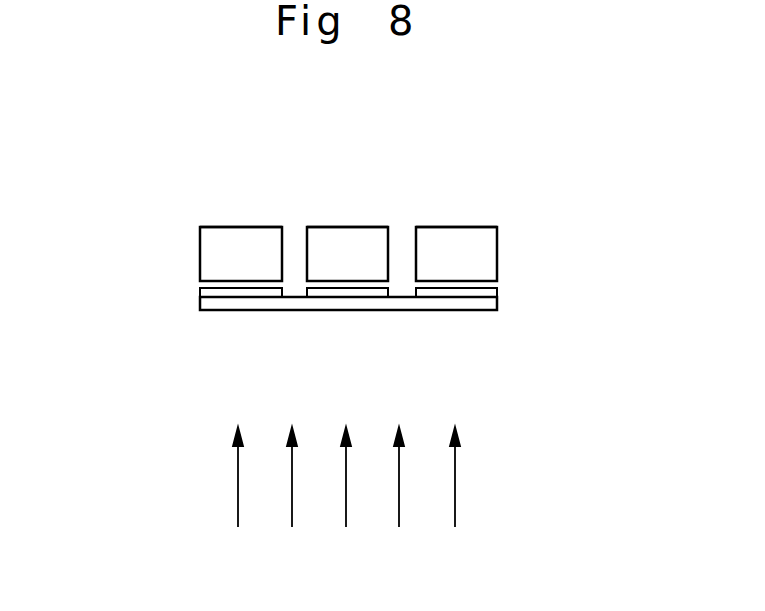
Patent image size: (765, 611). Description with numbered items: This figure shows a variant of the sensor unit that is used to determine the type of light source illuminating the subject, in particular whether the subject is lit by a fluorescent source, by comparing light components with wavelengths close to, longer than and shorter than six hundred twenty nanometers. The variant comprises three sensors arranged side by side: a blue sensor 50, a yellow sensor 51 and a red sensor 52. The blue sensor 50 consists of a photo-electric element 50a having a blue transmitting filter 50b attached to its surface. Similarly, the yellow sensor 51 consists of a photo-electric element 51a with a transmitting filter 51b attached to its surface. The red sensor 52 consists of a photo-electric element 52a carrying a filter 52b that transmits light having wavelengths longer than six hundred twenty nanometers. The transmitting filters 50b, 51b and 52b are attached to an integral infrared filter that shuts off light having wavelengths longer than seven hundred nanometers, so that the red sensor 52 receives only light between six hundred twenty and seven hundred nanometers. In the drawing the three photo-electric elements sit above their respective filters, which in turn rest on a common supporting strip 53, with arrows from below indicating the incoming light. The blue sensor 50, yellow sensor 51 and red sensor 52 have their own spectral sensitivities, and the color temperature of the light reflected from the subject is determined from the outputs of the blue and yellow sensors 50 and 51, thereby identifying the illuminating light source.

The blue sensor 50 is at (500, 242).
The photo-electric element 50a is at (460, 236).
The blue transmitting filter 50b is at (497, 294).
The yellow sensor 51 is at (379, 224).
The photo-electric element 51a is at (333, 236).
The transmitting filter 51b is at (368, 293).
The red sensor 52 is at (196, 250).
The photo-electric element 52a is at (240, 236).
The filter 52b is at (200, 292).
The substrate 53 is at (285, 310).